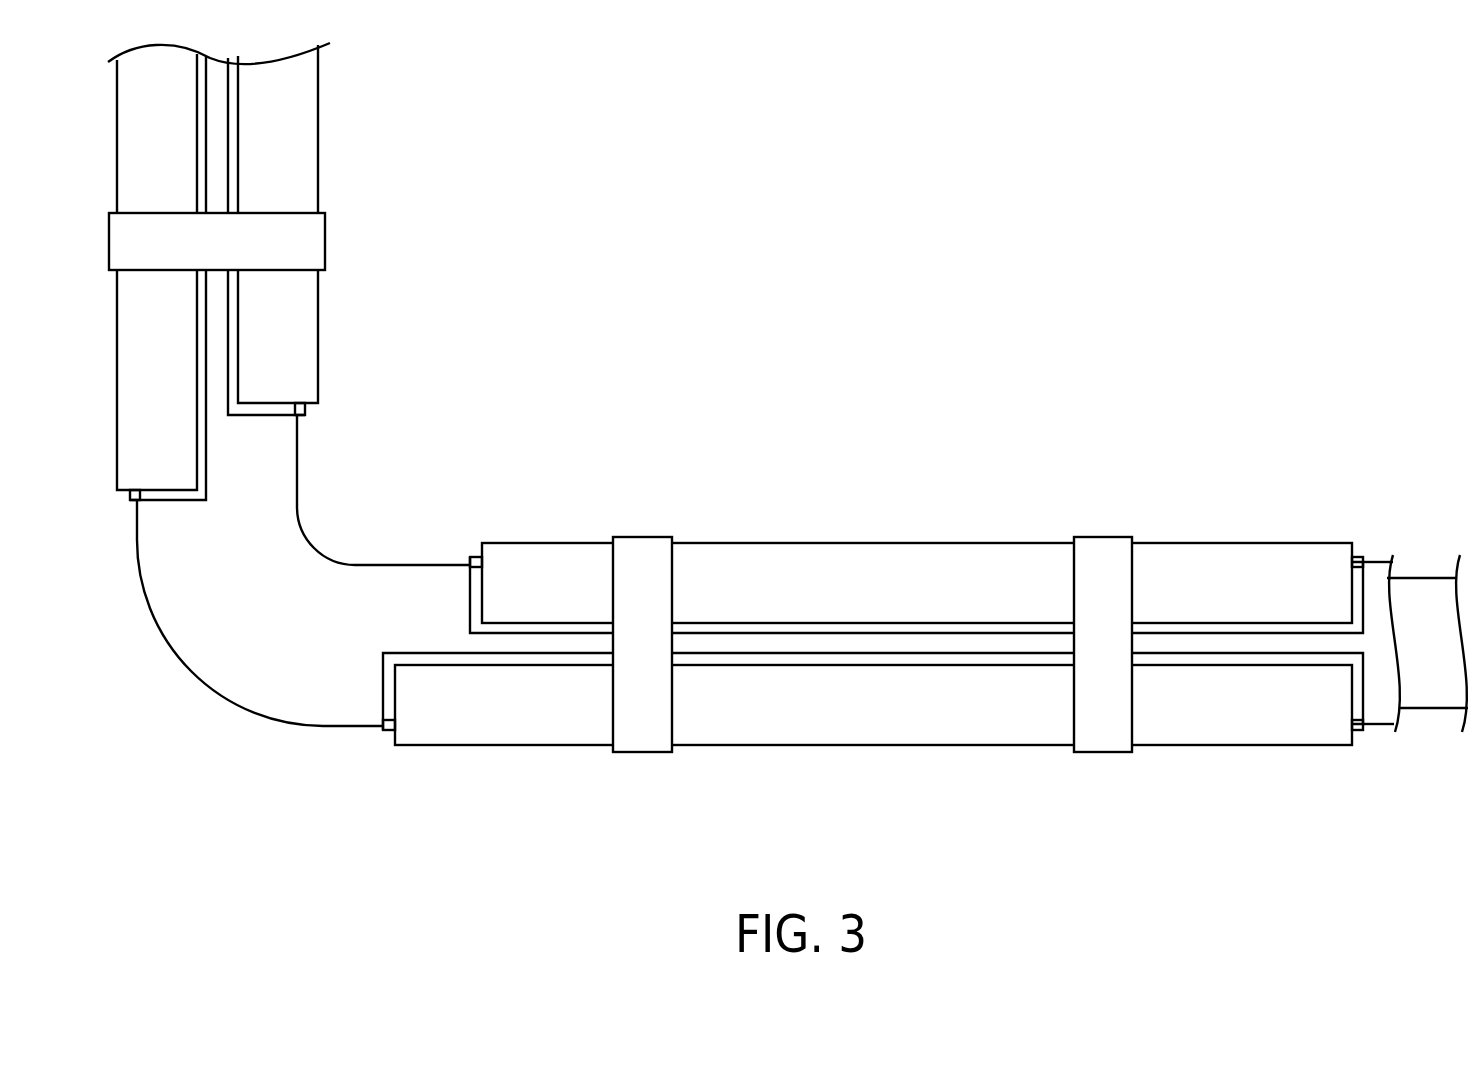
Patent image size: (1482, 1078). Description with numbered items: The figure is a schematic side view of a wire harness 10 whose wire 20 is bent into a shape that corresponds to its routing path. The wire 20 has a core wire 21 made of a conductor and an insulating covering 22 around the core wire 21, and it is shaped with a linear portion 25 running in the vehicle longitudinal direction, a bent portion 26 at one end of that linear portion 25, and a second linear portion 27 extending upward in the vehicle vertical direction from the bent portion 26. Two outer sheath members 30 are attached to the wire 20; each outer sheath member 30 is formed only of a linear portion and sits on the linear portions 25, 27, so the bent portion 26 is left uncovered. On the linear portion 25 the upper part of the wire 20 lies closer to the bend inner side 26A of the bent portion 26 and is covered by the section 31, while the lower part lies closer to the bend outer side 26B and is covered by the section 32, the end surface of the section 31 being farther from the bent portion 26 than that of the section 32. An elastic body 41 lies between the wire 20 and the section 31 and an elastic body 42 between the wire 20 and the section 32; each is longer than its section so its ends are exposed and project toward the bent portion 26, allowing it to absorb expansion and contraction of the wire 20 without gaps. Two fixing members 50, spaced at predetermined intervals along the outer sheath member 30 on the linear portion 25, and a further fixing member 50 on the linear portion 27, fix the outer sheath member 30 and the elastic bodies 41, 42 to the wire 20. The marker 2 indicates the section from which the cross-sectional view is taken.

The wire harness 10 is at (1278, 286).
The wire 20 is at (1358, 490).
The core wire 21 is at (1427, 592).
The insulating covering 22 is at (1372, 568).
The linear portion 25 is at (297, 836).
The bent portion 26 is at (105, 735).
The bend inner side 26A is at (316, 541).
The bend outer side 26B is at (218, 690).
The linear portion 27 is at (430, 47).
The outer sheath member 30 is at (383, 73).
The section 31 is at (310, 97).
The section 32 is at (178, 149).
The elastic body 41 is at (306, 410).
The elastic body 42 is at (126, 497).
The fixing member 50 is at (318, 238).
The section line of FIG. 2 is at (643, 515).